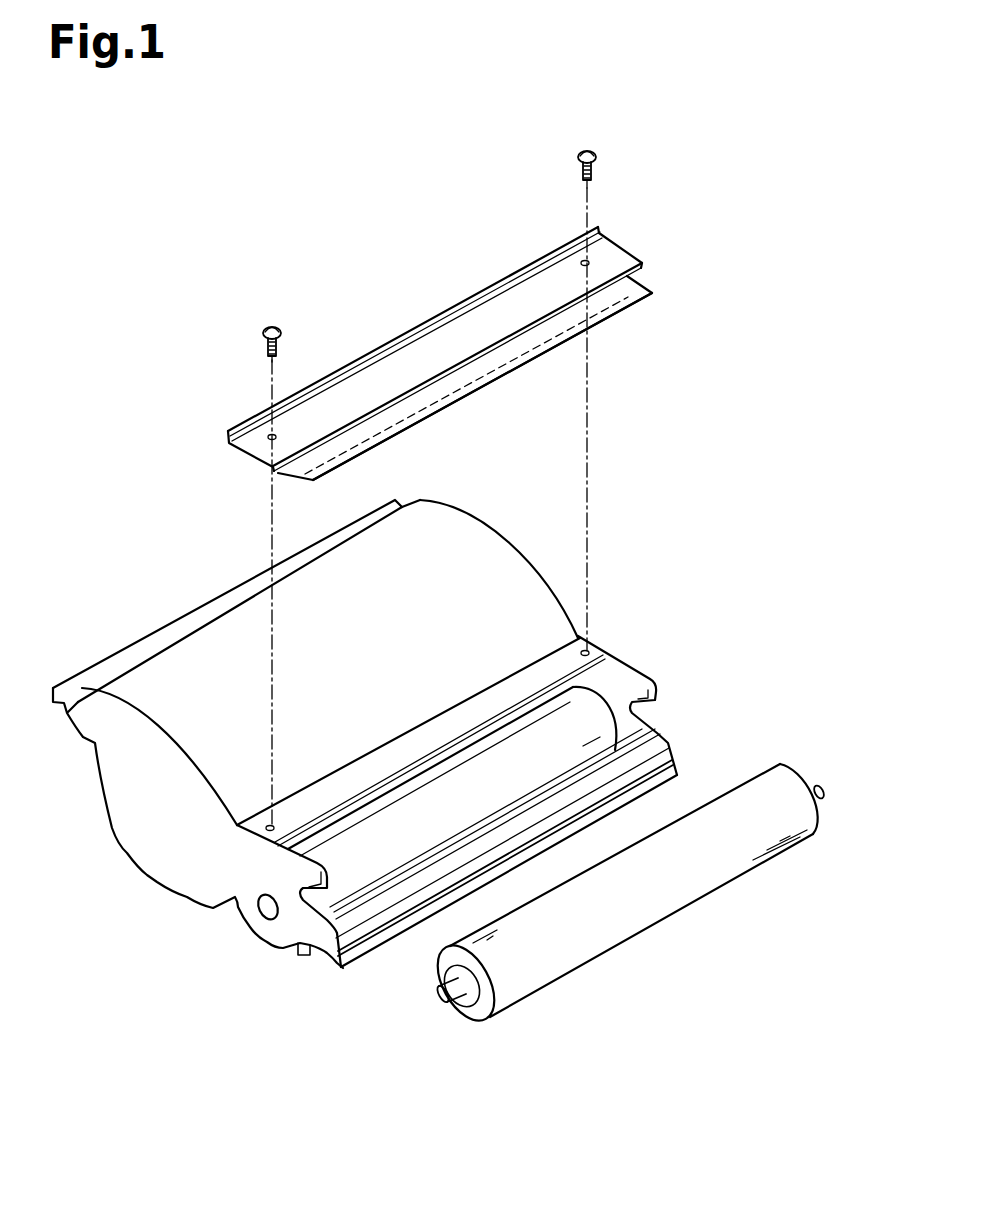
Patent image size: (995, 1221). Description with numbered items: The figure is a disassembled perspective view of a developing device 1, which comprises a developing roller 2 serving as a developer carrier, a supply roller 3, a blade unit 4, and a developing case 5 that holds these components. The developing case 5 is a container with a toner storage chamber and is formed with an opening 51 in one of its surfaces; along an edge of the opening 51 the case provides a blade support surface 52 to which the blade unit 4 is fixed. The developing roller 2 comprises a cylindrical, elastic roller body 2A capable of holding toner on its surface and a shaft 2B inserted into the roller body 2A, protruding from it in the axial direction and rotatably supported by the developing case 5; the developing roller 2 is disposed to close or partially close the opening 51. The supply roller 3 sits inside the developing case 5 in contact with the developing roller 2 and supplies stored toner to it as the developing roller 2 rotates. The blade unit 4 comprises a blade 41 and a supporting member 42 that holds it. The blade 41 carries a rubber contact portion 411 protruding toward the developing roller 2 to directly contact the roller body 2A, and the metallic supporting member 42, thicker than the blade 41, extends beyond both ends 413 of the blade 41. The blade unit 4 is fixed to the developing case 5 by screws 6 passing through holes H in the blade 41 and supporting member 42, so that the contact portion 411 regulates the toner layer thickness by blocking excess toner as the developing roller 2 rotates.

The developing device 1 is at (373, 140).
The developing roller 2 is at (642, 899).
The roller body 2A is at (657, 910).
The shaft 2B is at (820, 785).
The supply roller 3 is at (510, 752).
The blade unit 4 is at (459, 363).
The blade 41 is at (471, 409).
The contact portion 411 is at (305, 484).
The ends of the blade 413 is at (636, 289).
The supporting member 42 is at (459, 354).
The developing case 5 is at (365, 617).
The opening 51 is at (410, 893).
The blade support surface 52 is at (442, 718).
The screws 6 is at (591, 152).
The holes H is at (581, 262).